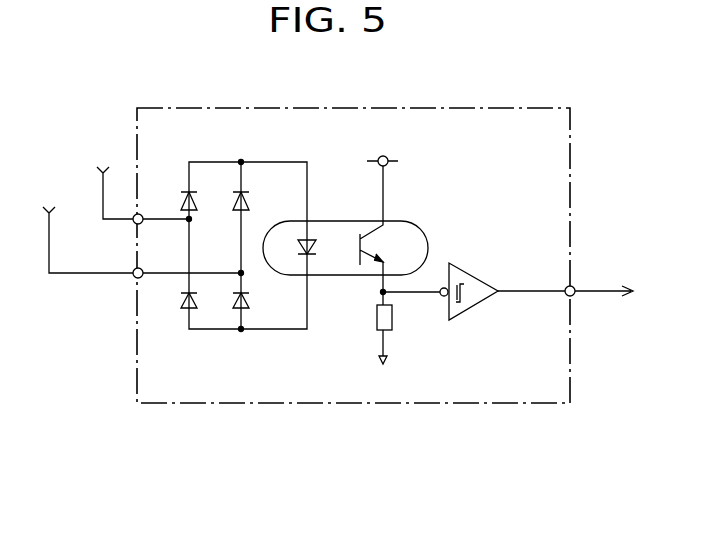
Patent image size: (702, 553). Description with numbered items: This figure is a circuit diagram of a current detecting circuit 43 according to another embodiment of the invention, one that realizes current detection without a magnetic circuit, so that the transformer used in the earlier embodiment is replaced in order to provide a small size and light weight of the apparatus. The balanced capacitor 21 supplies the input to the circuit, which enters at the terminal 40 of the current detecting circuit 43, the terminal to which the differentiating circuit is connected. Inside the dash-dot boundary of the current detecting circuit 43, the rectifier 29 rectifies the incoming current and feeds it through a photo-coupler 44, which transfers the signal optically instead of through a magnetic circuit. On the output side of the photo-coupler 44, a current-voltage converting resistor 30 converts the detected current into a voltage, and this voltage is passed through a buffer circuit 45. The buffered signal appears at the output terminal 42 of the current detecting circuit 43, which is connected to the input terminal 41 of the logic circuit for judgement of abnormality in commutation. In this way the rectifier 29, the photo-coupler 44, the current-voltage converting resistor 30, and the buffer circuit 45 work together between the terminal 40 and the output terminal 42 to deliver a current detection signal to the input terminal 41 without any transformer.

The balanced capacitor 21 is at (88, 228).
The rectifier 29 is at (182, 306).
The current-voltage converting resistor 30 is at (393, 318).
The terminal of the current detecting circuit 40 is at (134, 223).
The input terminal of the logic circuit for judgement of abnormality in commutation 41 is at (620, 293).
The output terminal of the current detecting circuit 42 is at (573, 286).
The current detecting circuit 43 is at (265, 404).
The photo-coupler 44 is at (405, 221).
The buffer circuit 45 is at (480, 276).